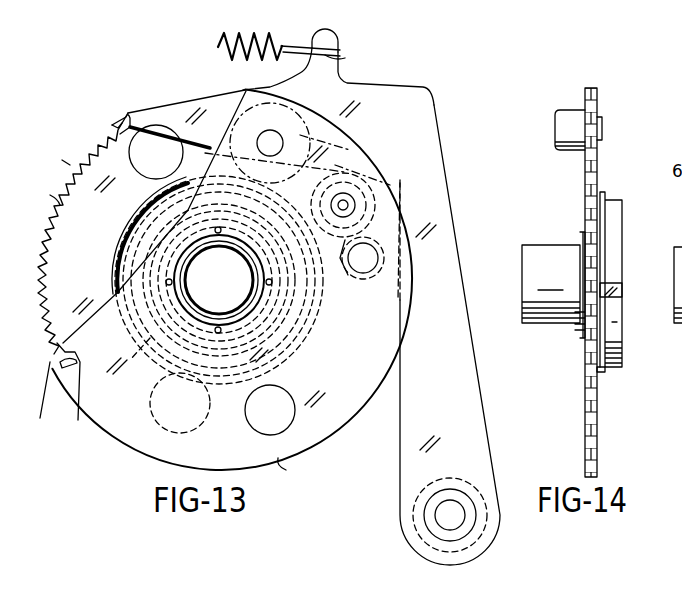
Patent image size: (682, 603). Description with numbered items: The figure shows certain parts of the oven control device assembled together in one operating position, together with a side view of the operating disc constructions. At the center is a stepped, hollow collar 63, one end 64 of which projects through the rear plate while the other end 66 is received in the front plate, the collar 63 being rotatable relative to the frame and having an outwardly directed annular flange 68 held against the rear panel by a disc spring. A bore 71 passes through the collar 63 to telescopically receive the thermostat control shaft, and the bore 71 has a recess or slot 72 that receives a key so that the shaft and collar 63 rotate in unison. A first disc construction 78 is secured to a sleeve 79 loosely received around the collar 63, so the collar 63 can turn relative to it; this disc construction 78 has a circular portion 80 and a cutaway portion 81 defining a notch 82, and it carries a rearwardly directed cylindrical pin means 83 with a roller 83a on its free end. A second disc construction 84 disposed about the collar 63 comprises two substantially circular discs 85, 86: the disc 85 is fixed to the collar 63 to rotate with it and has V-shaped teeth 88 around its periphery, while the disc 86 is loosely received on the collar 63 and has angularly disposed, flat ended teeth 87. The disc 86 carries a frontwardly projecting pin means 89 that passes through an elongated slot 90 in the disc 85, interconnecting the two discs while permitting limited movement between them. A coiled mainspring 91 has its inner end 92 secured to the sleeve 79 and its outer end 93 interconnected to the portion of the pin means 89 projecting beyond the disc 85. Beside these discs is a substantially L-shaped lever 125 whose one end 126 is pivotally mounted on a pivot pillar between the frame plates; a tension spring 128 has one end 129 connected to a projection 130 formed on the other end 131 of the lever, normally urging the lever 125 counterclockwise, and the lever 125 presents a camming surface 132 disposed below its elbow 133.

In FIG. 14, the stepped, hollow collar 63 is at (550, 250).
In FIG. 14, the one end of collar 64 is at (620, 225).
In FIG. 13, the other end of collar 66 is at (233, 312).
In FIG. 14, the annular flange 68 is at (604, 372).
In FIG. 13, the bore 71 is at (243, 254).
In FIG. 14, the recess or slot 72 is at (622, 292).
In FIG. 13, the first disc construction 78 is at (316, 439).
In FIG. 13, the sleeve 79 is at (146, 358).
In FIG. 13, the circular portion 80 is at (278, 458).
In FIG. 13, the cutaway portion 81 is at (227, 125).
In FIG. 13, the notch 82 is at (73, 393).
In FIG. 13, the pin means 83 is at (358, 187).
In FIG. 13, the roller 83a is at (335, 172).
In FIG. 13, the second disc construction 84 is at (40, 199).
In FIG. 14, the second disc construction 84 is at (610, 157).
In FIG. 13, the disc 85 is at (110, 127).
In FIG. 14, the disc 85 is at (583, 92).
In FIG. 13, the disc 86 is at (115, 122).
In FIG. 14, the disc 86 is at (600, 93).
In FIG. 13, the flat ended teeth 87 is at (67, 160).
In FIG. 13, the V-shaped teeth 88 is at (67, 197).
In FIG. 13, the pin means 89 is at (350, 252).
In FIG. 14, the pin means 89 is at (567, 114).
In FIG. 13, the elongated slot 90 is at (373, 282).
In FIG. 13, the coiled spring or mainspring 91 is at (296, 326).
In FIG. 13, the inner end of mainspring 92 is at (128, 328).
In FIG. 13, the outer end of mainspring 93 is at (360, 273).
In FIG. 13, the L-shaped lever 125 is at (446, 182).
In FIG. 13, the one end of lever 126 is at (491, 436).
In FIG. 13, the tension spring 128 is at (246, 32).
In FIG. 13, the one end of tension spring 129 is at (345, 58).
In FIG. 13, the projection 130 is at (340, 41).
In FIG. 13, the other end of lever 131 is at (348, 93).
In FIG. 13, the camming surface 132 is at (399, 200).
In FIG. 13, the elbow 133 is at (350, 186).